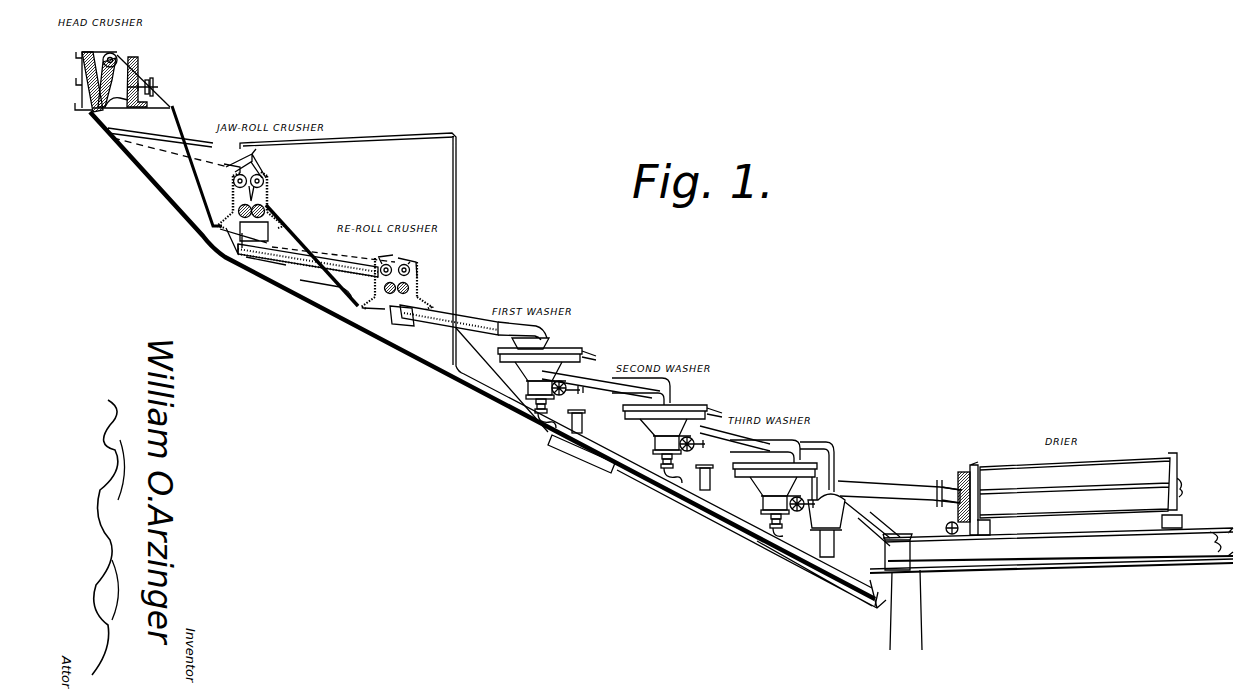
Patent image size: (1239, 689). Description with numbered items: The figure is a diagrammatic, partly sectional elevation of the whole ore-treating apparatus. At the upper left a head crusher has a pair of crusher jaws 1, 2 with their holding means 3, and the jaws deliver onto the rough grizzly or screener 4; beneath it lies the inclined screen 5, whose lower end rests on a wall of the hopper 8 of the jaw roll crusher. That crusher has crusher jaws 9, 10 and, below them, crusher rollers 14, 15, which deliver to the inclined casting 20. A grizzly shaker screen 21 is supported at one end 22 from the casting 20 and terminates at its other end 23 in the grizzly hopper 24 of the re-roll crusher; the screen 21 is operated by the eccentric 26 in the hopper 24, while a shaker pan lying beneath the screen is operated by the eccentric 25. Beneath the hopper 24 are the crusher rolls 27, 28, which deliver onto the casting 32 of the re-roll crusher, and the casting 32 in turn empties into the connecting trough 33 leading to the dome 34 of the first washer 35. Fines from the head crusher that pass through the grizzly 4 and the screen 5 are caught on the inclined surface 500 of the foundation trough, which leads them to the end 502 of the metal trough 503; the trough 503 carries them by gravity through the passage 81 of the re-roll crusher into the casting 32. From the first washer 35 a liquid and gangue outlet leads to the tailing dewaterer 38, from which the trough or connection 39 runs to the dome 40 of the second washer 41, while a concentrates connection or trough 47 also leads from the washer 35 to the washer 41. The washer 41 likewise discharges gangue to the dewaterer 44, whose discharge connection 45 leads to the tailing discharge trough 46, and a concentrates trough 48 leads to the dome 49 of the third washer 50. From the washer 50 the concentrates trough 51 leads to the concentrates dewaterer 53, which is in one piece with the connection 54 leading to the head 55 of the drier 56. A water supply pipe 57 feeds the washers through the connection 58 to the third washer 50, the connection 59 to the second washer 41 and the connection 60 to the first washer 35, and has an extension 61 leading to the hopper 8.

The crusher jaw 1 is at (84, 90).
The crusher jaw 2 is at (116, 72).
The holding means 3 is at (155, 84).
The rough grizzly or screener 4 is at (157, 140).
The inclined screen 5 is at (162, 150).
The inclined surface 500 is at (178, 203).
The hopper 8 is at (256, 152).
The crusher jaw 9 is at (233, 187).
The crusher jaw 10 is at (264, 183).
The crusher roller 15 is at (265, 208).
The crusher roller 14 is at (232, 236).
The extension 61 is at (348, 139).
The inclined casting 20 is at (246, 257).
The grizzly shaker screen 21 is at (327, 256).
The end 22 is at (300, 244).
The eccentric 25 is at (291, 272).
The end 502 is at (240, 247).
The metal trough 503 is at (288, 275).
The passage 81 is at (342, 291).
The end 23 is at (384, 263).
The grizzly hopper 24 is at (405, 264).
The eccentric 26 is at (423, 266).
The crusher roll 28 is at (411, 279).
The crusher roll 27 is at (378, 302).
The casting 32 is at (401, 316).
The connecting trough 33 is at (466, 320).
The dome 34 is at (550, 347).
The first washer 35 is at (578, 348).
The concentrates connection or trough 47 is at (588, 366).
The trough or connection 39 is at (583, 389).
The connection 60 is at (549, 424).
The tailing dewaterer 38 is at (598, 378).
The dome 40 is at (680, 404).
The second washer 41 is at (704, 414).
The connection 59 is at (673, 468).
The dewaterer 44 is at (722, 452).
The concentrates connection or trough 48 is at (716, 438).
The washer 50 is at (818, 474).
The dome 49 is at (813, 460).
The connection 58 is at (781, 534).
The concentrates connection or trough 51 is at (825, 552).
The discharge connection 45 is at (840, 481).
The tailing discharge trough 46 is at (842, 494).
The concentrates dewaterer 53 is at (900, 487).
The connection 54 is at (938, 482).
The head 55 is at (972, 466).
The drier 56 is at (1143, 462).
The water supply pipe 57 is at (596, 460).